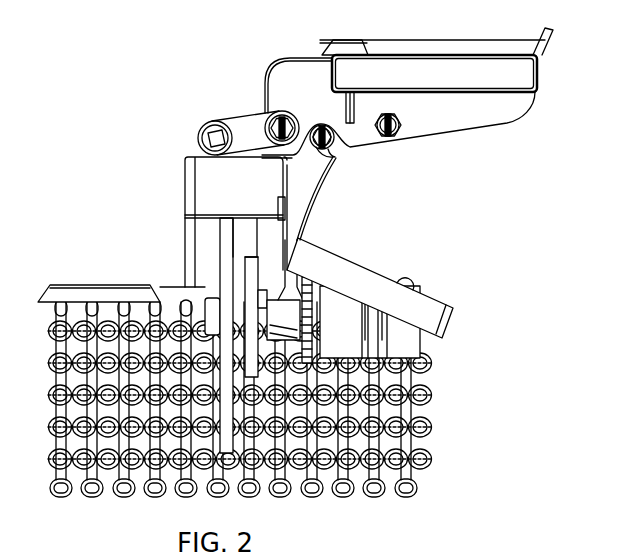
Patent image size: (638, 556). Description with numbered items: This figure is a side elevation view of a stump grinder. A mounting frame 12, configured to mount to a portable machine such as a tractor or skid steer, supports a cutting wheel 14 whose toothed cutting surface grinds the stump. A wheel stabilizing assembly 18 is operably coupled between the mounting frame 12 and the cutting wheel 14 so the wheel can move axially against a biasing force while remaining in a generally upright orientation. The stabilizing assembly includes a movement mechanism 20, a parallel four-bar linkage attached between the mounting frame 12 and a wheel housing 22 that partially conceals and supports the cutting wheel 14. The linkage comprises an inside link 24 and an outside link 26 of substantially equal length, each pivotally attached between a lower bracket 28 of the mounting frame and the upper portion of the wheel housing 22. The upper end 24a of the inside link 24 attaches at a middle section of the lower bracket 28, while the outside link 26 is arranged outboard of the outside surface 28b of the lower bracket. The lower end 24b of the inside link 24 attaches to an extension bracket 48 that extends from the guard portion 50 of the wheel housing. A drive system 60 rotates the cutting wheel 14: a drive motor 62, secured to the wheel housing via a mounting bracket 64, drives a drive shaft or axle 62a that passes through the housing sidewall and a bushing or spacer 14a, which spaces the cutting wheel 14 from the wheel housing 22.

The mounting frame 12 is at (451, 50).
The cutting wheel 14 is at (228, 441).
The bushing or spacer 14a is at (240, 313).
The wheel stabilizing assembly 18 is at (179, 50).
The movement mechanism 20 is at (222, 60).
The wheel housing 22 is at (190, 159).
The inside link 24 is at (341, 143).
The upper end of inside link 24a is at (395, 134).
The lower end of inside link 24b is at (333, 162).
The outside link 26 is at (245, 124).
The lower bracket 28 is at (500, 117).
The outside surface of lower bracket 28b is at (298, 78).
The extension bracket 48 is at (302, 200).
The guard portion 50 is at (211, 194).
The drive system 60 is at (350, 392).
The drive motor 62 is at (346, 336).
The drive shaft or axle 62a is at (207, 313).
The mounting bracket 64 is at (290, 320).